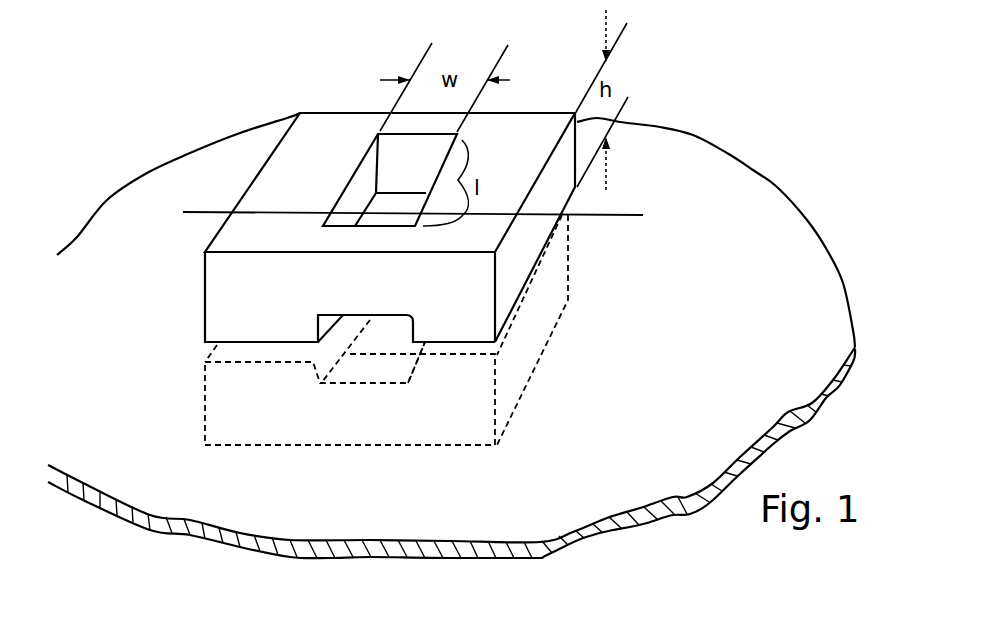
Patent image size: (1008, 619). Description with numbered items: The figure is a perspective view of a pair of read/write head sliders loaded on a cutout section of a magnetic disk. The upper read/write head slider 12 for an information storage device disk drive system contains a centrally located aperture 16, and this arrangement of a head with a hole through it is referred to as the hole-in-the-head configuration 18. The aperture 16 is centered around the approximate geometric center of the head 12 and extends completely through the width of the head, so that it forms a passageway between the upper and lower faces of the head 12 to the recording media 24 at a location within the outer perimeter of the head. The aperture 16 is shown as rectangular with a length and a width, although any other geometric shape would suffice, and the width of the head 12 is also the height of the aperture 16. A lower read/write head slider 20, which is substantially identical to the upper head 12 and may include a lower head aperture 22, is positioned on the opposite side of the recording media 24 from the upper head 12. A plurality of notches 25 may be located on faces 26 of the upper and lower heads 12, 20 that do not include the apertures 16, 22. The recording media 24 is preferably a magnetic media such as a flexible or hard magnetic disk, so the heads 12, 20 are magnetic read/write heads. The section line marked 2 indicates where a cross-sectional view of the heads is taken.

The upper read/write head slider 12 is at (302, 115).
The aperture 16 is at (370, 155).
The hole-in-the-head configuration 18 is at (262, 147).
The lower read/write head slider 20 is at (368, 424).
The lower head aperture 22 is at (388, 355).
The recording media 24 is at (753, 172).
The notches 25 is at (398, 315).
The faces 26 is at (568, 190).
The section line 2- 2 is at (600, 233).